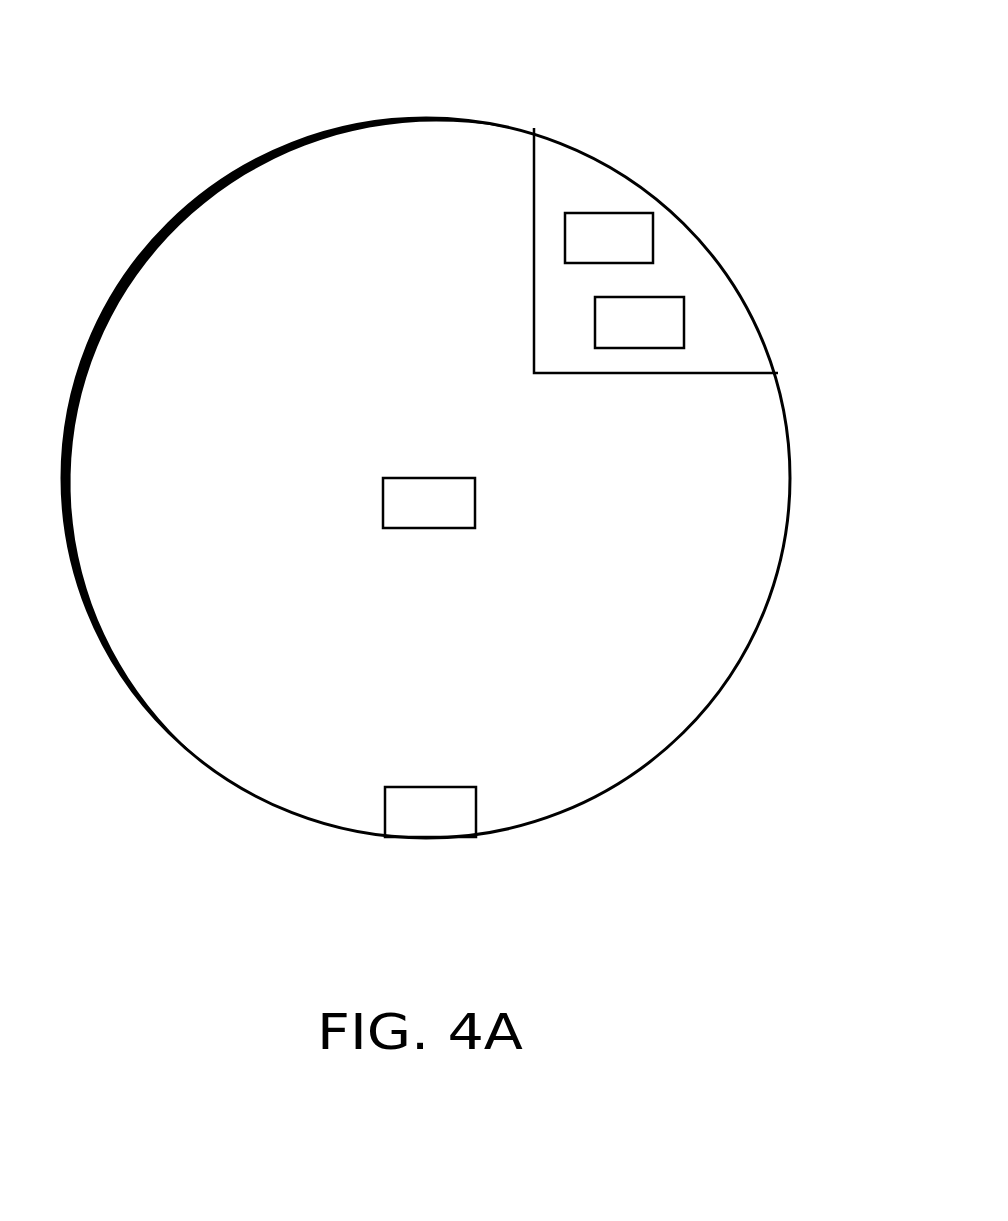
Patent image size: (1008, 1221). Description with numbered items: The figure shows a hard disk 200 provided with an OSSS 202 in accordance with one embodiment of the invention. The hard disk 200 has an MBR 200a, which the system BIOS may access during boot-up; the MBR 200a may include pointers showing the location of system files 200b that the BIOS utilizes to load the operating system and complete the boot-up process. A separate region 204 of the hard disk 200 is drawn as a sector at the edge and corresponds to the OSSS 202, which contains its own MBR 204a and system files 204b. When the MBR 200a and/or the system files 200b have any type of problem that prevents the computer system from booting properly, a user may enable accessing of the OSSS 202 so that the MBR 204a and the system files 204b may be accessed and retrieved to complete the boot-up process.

The hard disk 200 is at (492, 469).
The MBR 200a is at (476, 815).
The system files 200b is at (475, 510).
The OSSS 202 is at (763, 503).
The sector region of wafer 204 is at (697, 268).
The MBR 204a is at (653, 238).
The system files 204b is at (684, 325).